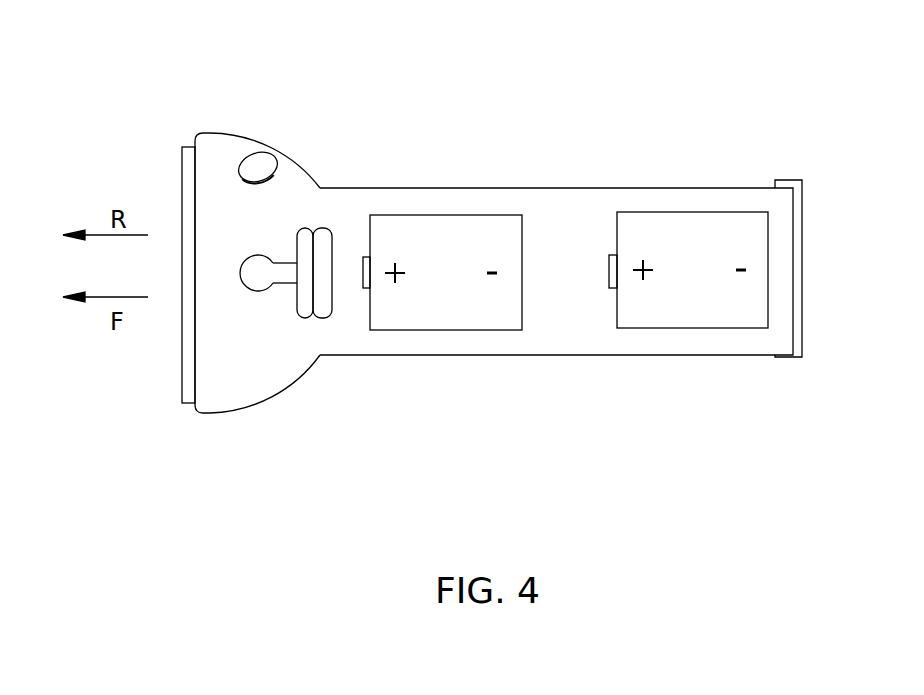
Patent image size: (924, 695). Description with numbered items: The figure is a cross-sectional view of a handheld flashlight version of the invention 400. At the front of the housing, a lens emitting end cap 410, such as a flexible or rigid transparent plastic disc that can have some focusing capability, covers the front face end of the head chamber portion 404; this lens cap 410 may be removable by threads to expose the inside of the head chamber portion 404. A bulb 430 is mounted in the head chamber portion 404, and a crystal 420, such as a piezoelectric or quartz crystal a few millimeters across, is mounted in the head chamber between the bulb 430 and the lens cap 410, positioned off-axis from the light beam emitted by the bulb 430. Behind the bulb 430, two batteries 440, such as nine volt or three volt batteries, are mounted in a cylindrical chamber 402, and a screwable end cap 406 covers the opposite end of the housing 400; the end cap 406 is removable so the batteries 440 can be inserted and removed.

The handheld invention 400 is at (812, 90).
The cylindrical chamber 402 is at (556, 306).
The head chamber portion 404 is at (233, 314).
The screwable end cap 406 is at (829, 301).
The lens emitting end cap 410 is at (134, 230).
The crystal 420 is at (299, 125).
The bulb 430 is at (317, 350).
The batteries 440 is at (651, 227).